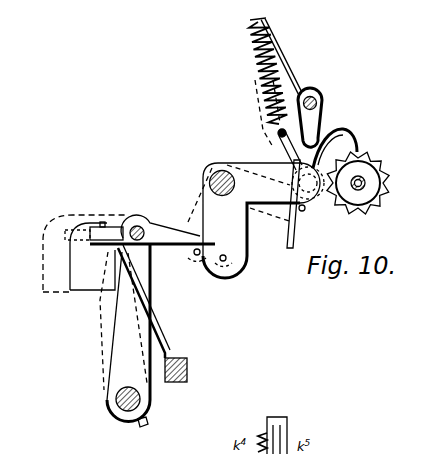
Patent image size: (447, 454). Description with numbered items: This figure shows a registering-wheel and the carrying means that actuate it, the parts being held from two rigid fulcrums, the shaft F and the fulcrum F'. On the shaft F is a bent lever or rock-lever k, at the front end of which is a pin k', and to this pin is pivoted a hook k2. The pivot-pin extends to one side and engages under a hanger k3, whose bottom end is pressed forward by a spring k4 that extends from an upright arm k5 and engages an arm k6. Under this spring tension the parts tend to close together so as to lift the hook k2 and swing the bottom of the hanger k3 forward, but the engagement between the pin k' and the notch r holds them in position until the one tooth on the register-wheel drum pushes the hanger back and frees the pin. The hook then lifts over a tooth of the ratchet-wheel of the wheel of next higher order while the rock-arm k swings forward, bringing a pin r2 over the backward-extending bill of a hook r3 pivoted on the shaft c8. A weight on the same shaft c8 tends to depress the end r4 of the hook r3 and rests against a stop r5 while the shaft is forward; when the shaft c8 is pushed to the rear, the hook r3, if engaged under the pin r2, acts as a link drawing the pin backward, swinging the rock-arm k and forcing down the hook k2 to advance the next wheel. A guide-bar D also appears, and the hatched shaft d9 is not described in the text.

The spring k4 is at (258, 83).
The upright arm k5 is at (291, 69).
The hanger k3 is at (325, 118).
The rigid fulcrum F' is at (324, 92).
The hook k2 is at (352, 129).
The arm k6 is at (278, 134).
The shaft F is at (220, 167).
The rock-lever k is at (254, 220).
The pin k' is at (313, 200).
The notch r is at (203, 321).
The pin r2 is at (247, 268).
The hook r3 is at (196, 256).
The end of the hook r4 is at (98, 228).
The shaft c8 is at (139, 224).
The stop r5 is at (153, 330).
The guide-bar D is at (186, 383).
The roller shaft d9 is at (122, 412).